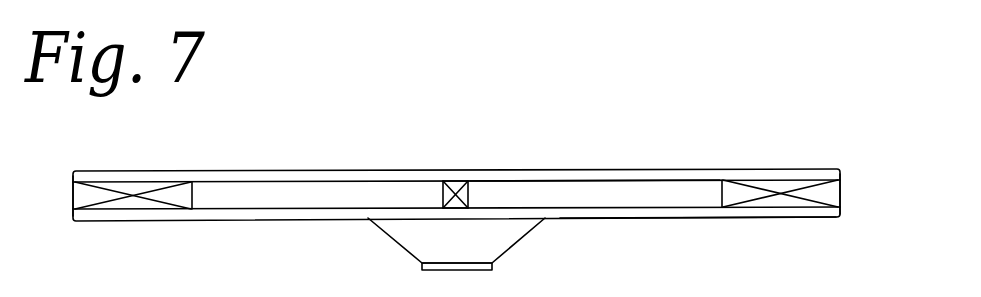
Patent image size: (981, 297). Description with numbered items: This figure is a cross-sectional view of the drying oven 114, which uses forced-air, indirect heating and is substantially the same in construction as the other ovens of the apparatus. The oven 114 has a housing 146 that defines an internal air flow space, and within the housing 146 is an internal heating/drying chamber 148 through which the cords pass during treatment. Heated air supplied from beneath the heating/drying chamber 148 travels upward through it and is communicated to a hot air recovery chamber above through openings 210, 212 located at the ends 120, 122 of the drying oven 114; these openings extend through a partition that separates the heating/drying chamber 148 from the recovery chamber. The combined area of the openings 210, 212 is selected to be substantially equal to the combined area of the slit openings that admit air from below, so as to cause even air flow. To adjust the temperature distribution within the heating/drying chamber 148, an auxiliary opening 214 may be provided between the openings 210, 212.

The drying oven 114 is at (665, 152).
The end of the drying oven 120 is at (833, 162).
The end of the drying oven 122 is at (86, 164).
The housing 146 is at (807, 217).
The heating/drying chamber 148 is at (597, 193).
The opening 210 is at (148, 202).
The opening 212 is at (770, 202).
The auxiliary opening 214 is at (454, 180).